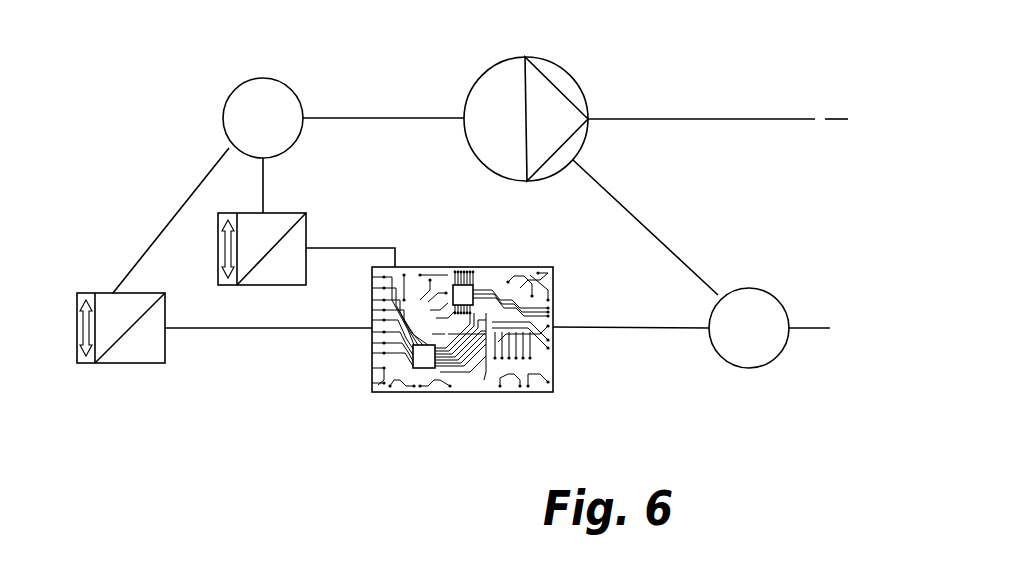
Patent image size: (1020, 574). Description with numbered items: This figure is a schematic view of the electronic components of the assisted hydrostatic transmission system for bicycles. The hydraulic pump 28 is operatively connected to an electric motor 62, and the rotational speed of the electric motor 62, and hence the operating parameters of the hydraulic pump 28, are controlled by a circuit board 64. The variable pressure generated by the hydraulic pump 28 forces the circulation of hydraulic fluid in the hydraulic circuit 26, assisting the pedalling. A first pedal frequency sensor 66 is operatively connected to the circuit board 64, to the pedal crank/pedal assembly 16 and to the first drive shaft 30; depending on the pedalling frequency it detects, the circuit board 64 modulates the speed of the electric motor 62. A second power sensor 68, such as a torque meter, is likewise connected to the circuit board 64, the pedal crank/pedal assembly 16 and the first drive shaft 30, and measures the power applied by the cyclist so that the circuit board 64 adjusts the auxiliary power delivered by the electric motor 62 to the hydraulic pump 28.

The pedal crank/pedal assembly 16 is at (265, 95).
The hydraulic circuit 26 is at (695, 118).
The hydraulic pump 28 is at (493, 82).
The first drive shaft 30 is at (375, 118).
The electric motor 62 is at (750, 360).
The circuit board 64 is at (482, 392).
The first pedal frequency sensor 66 is at (122, 363).
The second power sensor 68 is at (263, 285).